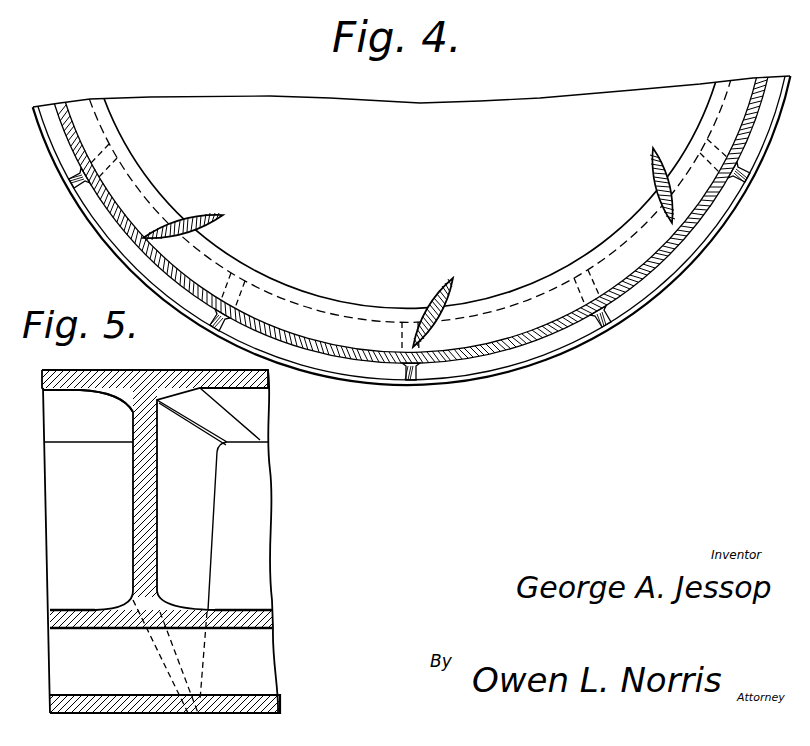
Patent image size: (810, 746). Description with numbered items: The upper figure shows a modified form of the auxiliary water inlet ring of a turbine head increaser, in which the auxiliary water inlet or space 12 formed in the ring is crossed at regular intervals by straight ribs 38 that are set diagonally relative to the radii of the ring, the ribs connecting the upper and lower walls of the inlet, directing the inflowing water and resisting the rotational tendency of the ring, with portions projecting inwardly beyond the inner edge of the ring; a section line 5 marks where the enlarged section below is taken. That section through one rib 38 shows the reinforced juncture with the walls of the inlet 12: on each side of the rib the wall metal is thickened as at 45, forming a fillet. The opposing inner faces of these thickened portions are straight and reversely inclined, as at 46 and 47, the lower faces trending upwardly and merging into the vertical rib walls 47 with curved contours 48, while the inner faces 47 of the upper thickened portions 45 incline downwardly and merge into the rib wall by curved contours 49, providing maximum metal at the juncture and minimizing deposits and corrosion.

In FIG. 4, the auxiliary water inlet or space 12 is at (289, 309).
In FIG. 5, the auxiliary water inlet or space 12 is at (58, 536).
In FIG. 4, the straight rib 38 is at (197, 214).
In FIG. 5, the straight rib 38 is at (147, 550).
In FIG. 4, the section line 5— 5 is at (659, 215).
In FIG. 5, the increase in thickness of the metal 45 is at (135, 372).
In FIG. 5, the reversely inclined face portion 46 is at (113, 607).
In FIG. 5, the inner inclined face / vertical rib wall 47 is at (131, 407).
In FIG. 5, the curved contour 48 is at (160, 592).
In FIG. 5, the curved contour 49 is at (127, 412).